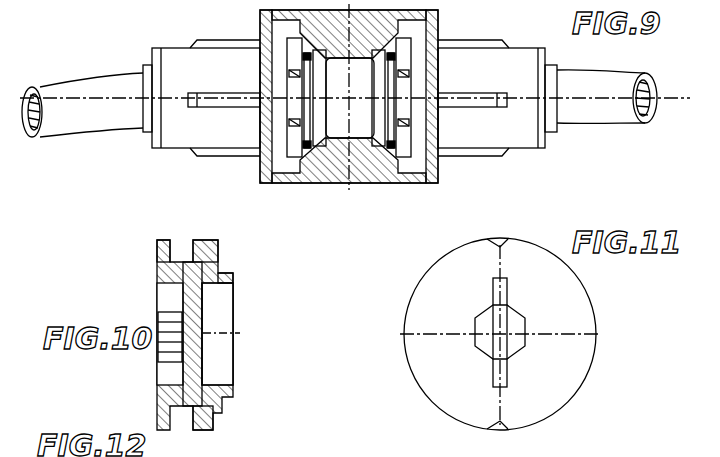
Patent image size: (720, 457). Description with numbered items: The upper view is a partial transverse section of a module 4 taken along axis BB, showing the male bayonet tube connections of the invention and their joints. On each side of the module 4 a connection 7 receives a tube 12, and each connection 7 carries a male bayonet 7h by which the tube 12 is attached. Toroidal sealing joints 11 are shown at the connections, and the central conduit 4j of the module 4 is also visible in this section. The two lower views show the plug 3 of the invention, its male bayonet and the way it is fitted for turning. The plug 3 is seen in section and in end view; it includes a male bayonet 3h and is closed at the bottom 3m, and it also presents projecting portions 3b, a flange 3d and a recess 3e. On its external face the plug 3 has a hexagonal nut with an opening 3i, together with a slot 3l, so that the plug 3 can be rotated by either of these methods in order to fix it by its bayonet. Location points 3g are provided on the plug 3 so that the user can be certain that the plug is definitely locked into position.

In FIG. 9, the module 4 is at (270, 183).
In FIG. 9, the central conduit 4j is at (347, 226).
In FIG. 9, the connection 7 is at (175, 62).
In FIG. 9, the male bayonet 7h is at (296, 90).
In FIG. 9, the toroidal sealing joint 11 is at (318, 150).
In FIG. 9, the tube 12 is at (85, 90).
In FIG. 10, the plug 3 is at (157, 276).
In FIG. 10, the projections 3b is at (223, 262).
In FIG. 10, the flange 3d is at (226, 272).
In FIG. 10, the closed bottom 3m is at (202, 298).
In FIG. 10, the recess 3e is at (223, 370).
In FIG. 10, the male bayonet 3h is at (212, 421).
In FIG. 11, the location points 3g is at (500, 245).
In FIG. 11, the opening 3i is at (525, 343).
In FIG. 11, the slot 3l is at (505, 373).